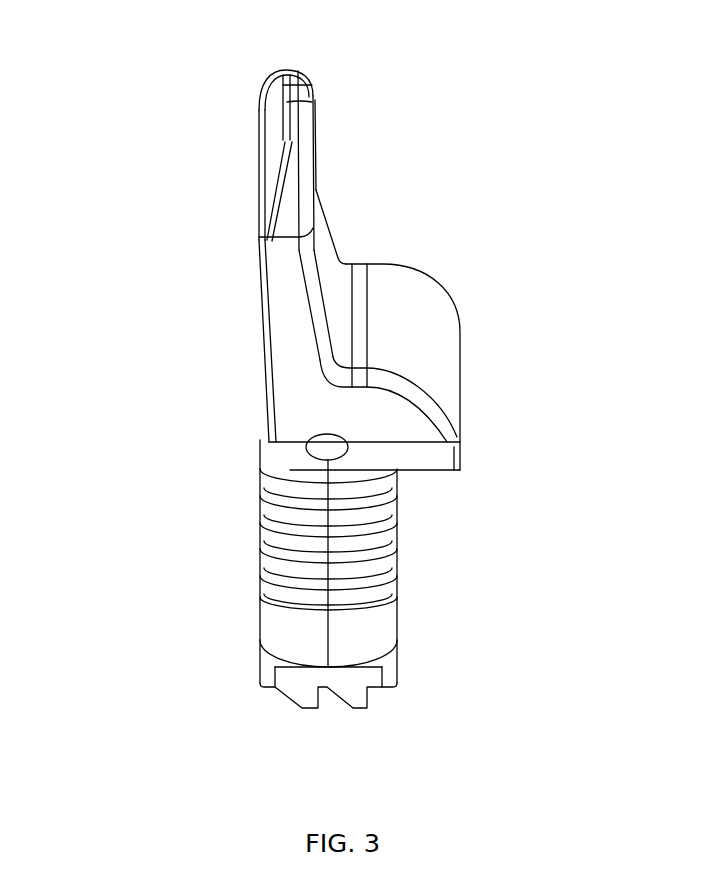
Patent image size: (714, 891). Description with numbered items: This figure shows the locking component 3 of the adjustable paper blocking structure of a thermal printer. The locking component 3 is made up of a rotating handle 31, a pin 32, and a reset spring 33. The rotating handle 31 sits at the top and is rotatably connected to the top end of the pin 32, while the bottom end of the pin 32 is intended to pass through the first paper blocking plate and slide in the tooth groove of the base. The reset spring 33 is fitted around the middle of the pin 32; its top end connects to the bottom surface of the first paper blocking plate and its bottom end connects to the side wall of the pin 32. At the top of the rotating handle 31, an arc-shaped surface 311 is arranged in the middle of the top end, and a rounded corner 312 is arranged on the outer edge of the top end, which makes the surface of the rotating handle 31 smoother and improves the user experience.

The locking component 3 is at (440, 290).
The rotating handle 31 is at (292, 342).
The arc-shaped surface 311 is at (326, 191).
The rounded corner 312 is at (280, 131).
The pin 32 is at (290, 637).
The reset spring 33 is at (290, 528).